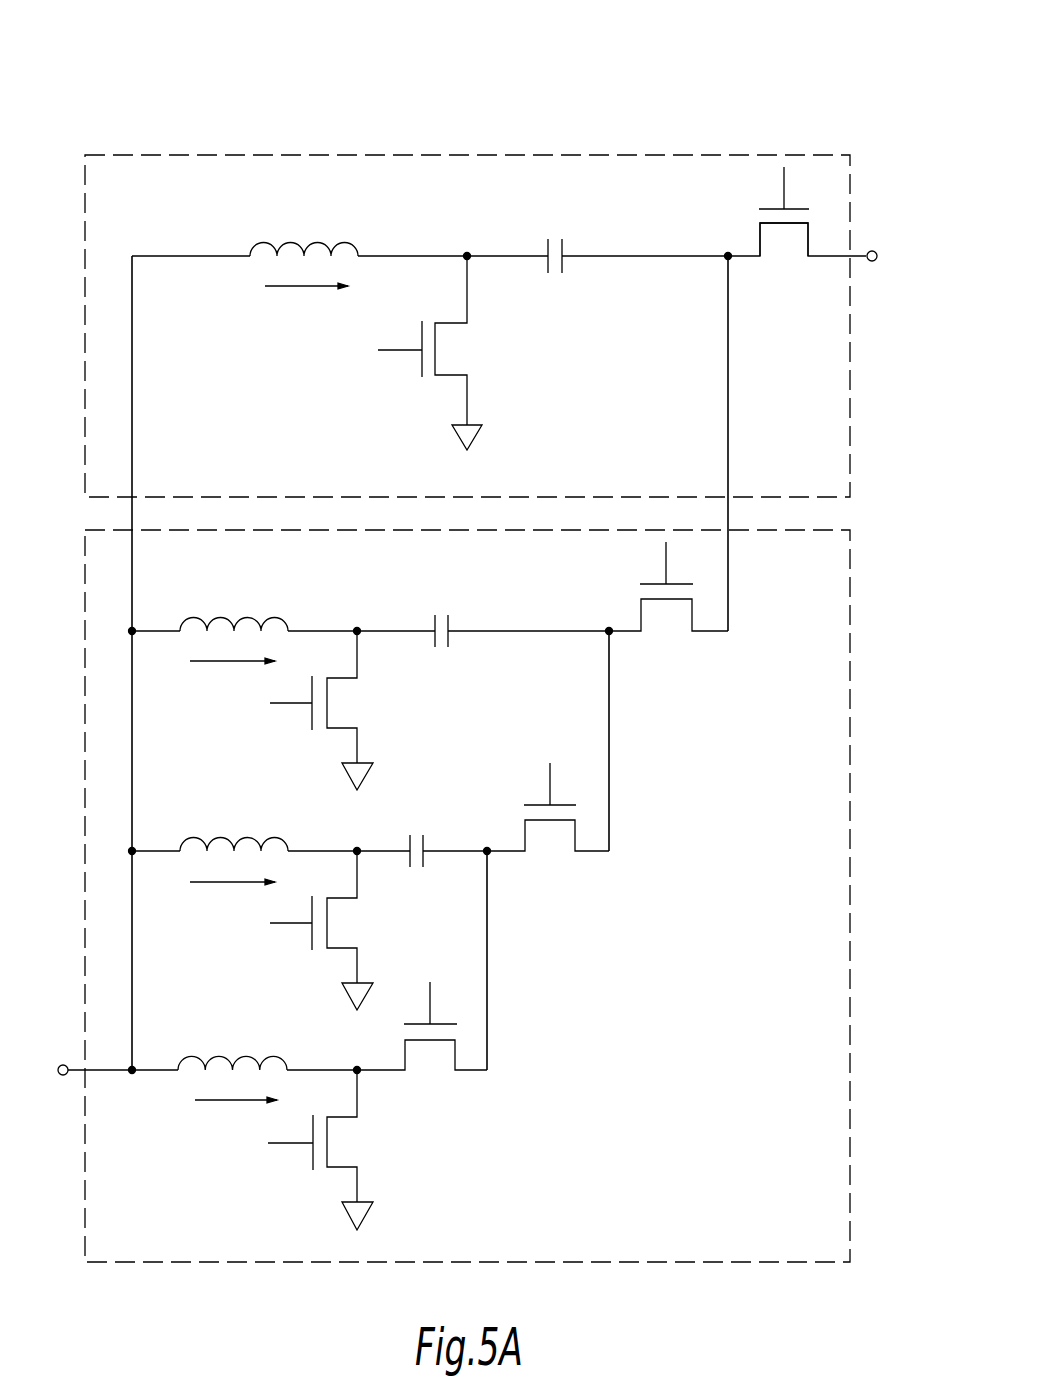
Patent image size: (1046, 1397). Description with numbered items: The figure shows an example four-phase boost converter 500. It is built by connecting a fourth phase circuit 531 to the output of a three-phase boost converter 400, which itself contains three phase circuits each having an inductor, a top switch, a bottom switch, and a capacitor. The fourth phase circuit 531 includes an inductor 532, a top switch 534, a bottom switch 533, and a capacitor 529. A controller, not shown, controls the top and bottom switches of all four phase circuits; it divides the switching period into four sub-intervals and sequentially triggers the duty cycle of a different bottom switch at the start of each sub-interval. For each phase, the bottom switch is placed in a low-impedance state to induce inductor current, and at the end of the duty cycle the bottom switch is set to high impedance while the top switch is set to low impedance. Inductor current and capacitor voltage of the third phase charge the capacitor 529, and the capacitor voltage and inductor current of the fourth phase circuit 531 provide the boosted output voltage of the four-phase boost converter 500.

The four-phase boost converter 500 is at (86, 40).
The fourth phase circuit 531 is at (852, 186).
The inductor 532 is at (258, 246).
The bottom switch 533 is at (440, 353).
The top switch 534 is at (770, 209).
The capacitor 529 is at (555, 276).
The three-phase boost converter 400 is at (852, 559).